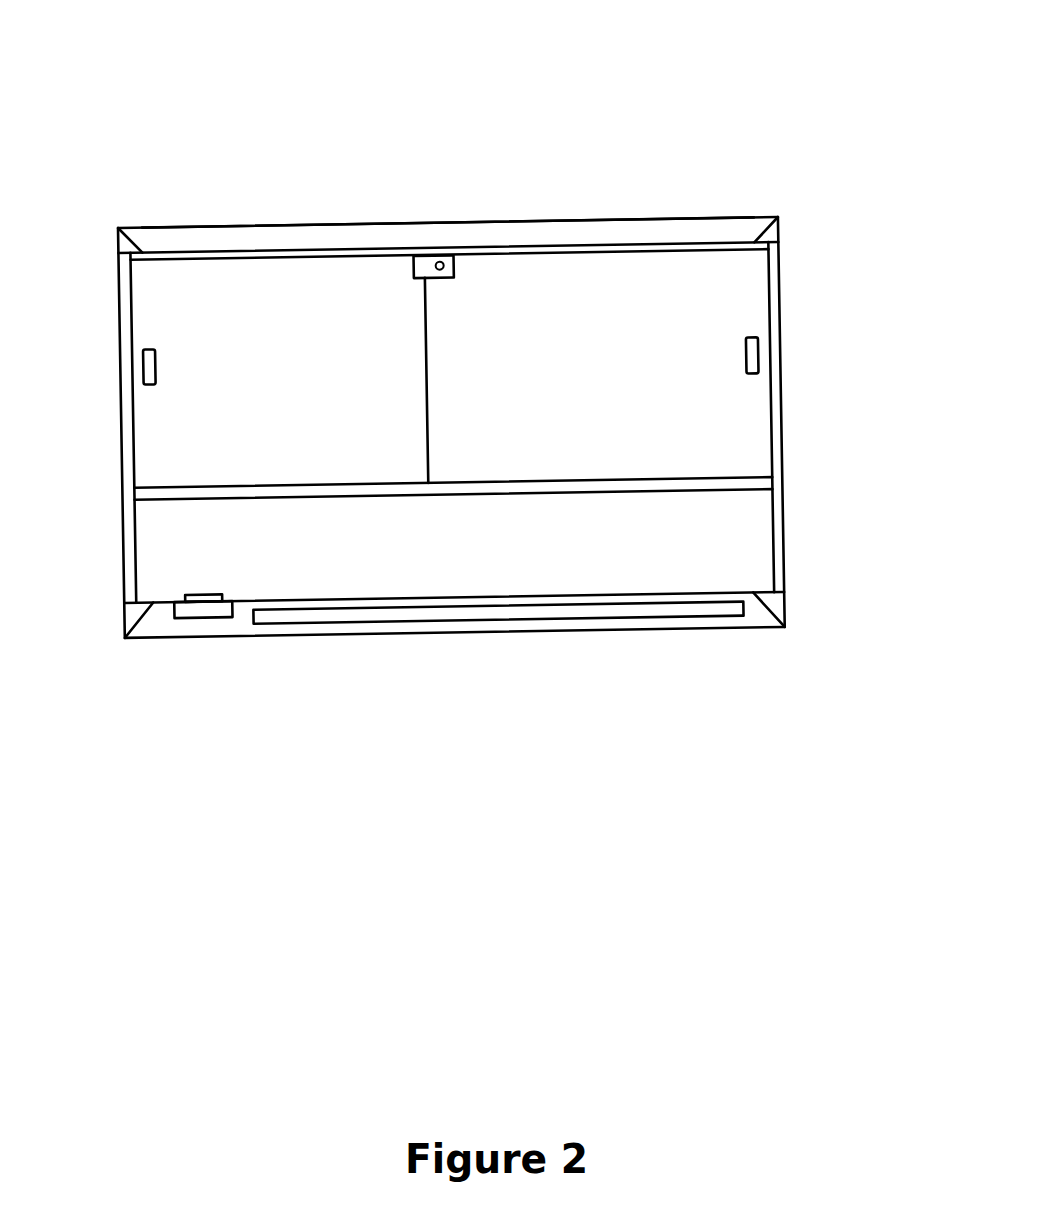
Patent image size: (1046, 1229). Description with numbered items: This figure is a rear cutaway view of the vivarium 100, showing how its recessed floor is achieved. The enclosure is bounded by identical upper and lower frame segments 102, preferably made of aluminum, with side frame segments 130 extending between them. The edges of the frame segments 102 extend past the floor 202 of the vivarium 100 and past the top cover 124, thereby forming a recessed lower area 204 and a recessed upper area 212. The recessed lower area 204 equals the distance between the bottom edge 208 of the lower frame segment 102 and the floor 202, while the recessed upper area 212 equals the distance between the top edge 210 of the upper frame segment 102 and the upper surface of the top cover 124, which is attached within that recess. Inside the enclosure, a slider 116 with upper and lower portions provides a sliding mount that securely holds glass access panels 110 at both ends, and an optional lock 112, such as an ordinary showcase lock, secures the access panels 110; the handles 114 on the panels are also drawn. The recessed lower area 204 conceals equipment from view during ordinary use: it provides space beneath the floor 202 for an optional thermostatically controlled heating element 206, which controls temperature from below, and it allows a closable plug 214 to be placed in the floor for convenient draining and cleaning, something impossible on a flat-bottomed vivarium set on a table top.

The vivarium 100 is at (336, 101).
The frame segments 102 is at (116, 243).
The access panels 110 is at (378, 460).
The lock 112 is at (455, 262).
The door handles 114 is at (157, 360).
The slider 116 is at (345, 490).
The top cover 124 is at (524, 250).
The side frame segments 130 is at (123, 437).
The floor 202 is at (282, 600).
The recessed lower area 204 is at (150, 622).
The heating element 206 is at (583, 612).
The bottom edge 208 is at (415, 634).
The top edge 210 is at (366, 222).
The recessed upper area 212 is at (668, 232).
The closable plug 214 is at (212, 595).